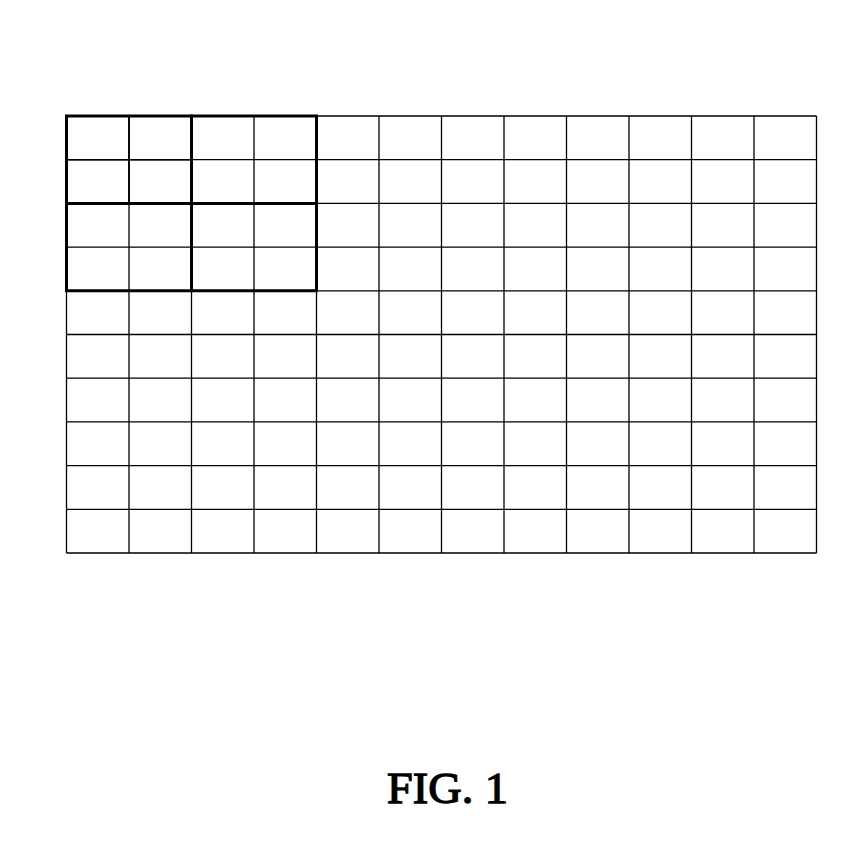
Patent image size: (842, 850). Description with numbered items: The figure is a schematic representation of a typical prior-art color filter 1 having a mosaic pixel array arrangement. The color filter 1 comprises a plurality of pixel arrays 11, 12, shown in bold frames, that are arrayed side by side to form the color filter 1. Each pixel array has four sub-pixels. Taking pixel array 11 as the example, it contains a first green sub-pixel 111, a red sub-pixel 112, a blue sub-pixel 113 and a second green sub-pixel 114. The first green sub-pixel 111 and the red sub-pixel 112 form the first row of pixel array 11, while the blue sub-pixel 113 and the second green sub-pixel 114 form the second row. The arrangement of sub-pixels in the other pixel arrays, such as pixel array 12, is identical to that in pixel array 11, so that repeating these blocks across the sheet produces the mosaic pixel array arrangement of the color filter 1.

The color filter 1 is at (668, 64).
The pixel array 11 is at (69, 97).
The pixel array 12 is at (319, 99).
The first green sub-pixel 111 is at (115, 124).
The red sub-pixel 112 is at (178, 126).
The blue sub-pixel 113 is at (77, 192).
The second green sub-pixel 114 is at (142, 198).